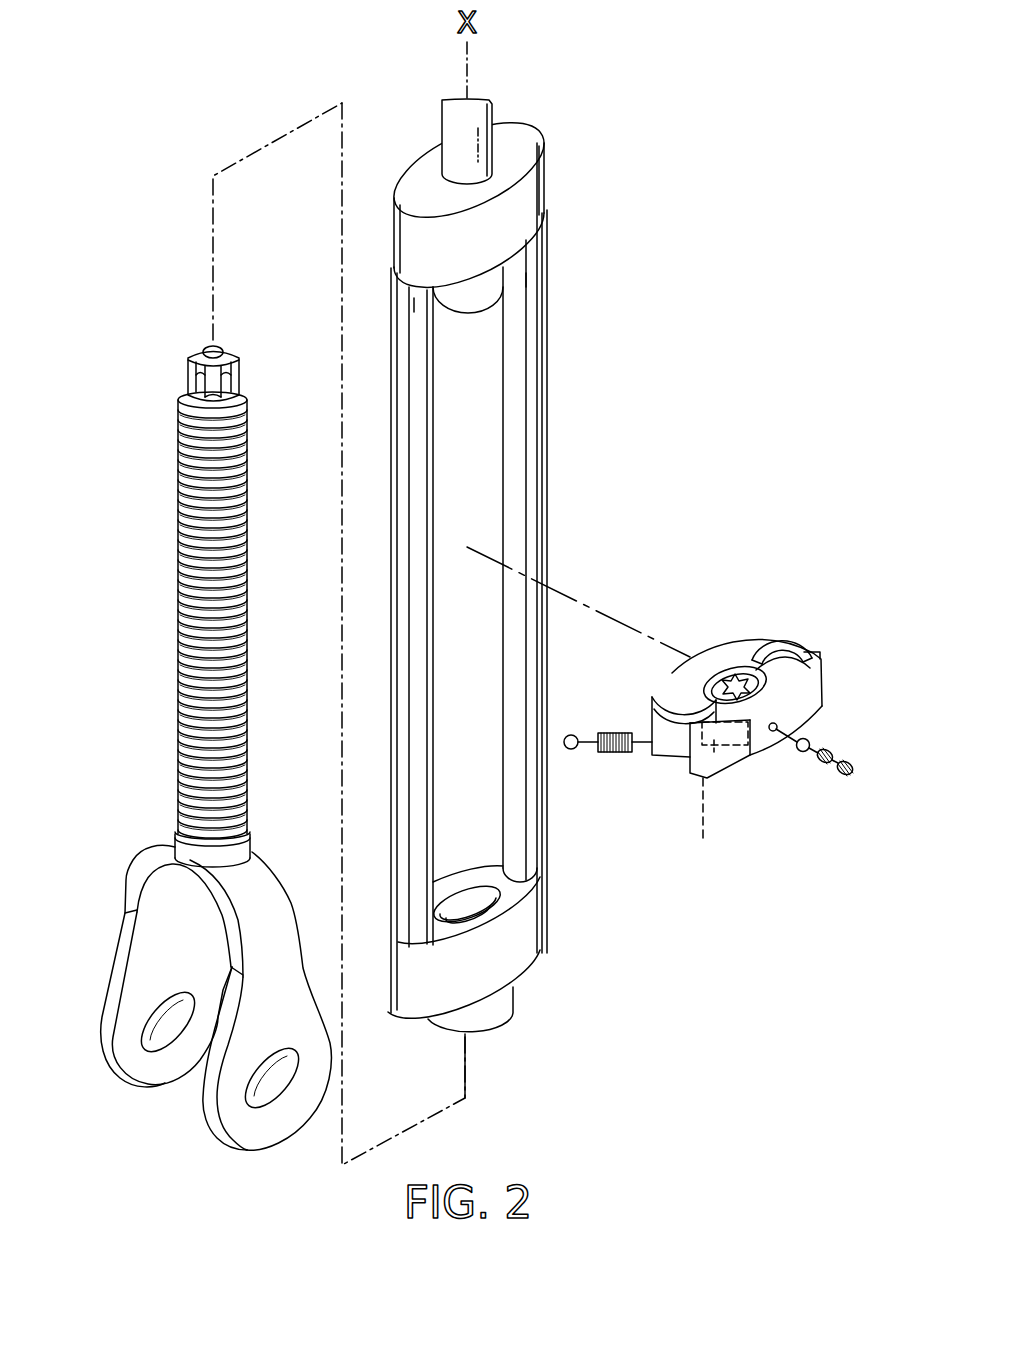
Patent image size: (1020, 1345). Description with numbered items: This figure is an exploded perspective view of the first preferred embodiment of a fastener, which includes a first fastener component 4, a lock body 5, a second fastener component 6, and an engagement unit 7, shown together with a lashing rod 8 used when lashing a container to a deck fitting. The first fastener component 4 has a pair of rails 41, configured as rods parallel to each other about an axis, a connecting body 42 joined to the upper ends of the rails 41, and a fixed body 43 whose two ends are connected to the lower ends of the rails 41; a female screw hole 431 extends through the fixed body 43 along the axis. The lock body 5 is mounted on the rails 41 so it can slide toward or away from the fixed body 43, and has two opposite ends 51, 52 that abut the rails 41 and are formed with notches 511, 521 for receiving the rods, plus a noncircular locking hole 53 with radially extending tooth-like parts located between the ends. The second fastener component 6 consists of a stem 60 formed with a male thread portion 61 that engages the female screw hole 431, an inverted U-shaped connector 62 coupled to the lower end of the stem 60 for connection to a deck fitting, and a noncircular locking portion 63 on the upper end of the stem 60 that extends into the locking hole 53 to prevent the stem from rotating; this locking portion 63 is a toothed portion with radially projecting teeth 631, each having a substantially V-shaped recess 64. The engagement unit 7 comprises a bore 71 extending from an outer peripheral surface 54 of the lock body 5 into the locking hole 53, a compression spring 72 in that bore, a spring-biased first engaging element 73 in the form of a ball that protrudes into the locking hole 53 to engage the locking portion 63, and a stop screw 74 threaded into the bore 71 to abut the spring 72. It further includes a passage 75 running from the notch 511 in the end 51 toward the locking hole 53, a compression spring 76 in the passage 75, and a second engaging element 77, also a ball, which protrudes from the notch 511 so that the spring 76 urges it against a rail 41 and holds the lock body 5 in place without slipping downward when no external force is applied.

The first fastener component 4 is at (548, 418).
The rails 41 is at (405, 346).
The connecting body 42 is at (530, 203).
The fixed body 43 is at (508, 970).
The female screw hole 431 is at (482, 897).
The lashing rod 8 is at (500, 112).
The lock body 5 is at (694, 645).
The end 51 is at (670, 703).
The notch 511 is at (672, 708).
The end 52 is at (784, 640).
The notch 521 is at (788, 646).
The locking hole 53 is at (755, 655).
The outer peripheral surface 54 is at (730, 768).
The second fastener component 6 is at (172, 745).
The stem 60 is at (178, 672).
The male thread portion 61 is at (200, 578).
The inverted U-shaped connector 62 is at (122, 938).
The locking portion 63 is at (222, 350).
The teeth 631 is at (245, 372).
The V-shaped recess 64 is at (230, 400).
The engagement unit 7 is at (630, 765).
The bore 71 is at (775, 725).
The spring 72 is at (822, 750).
The first engaging element 73 is at (803, 752).
The stop screw 74 is at (850, 772).
The passage 75 is at (703, 842).
The spring 76 is at (610, 755).
The second engaging element 77 is at (571, 752).